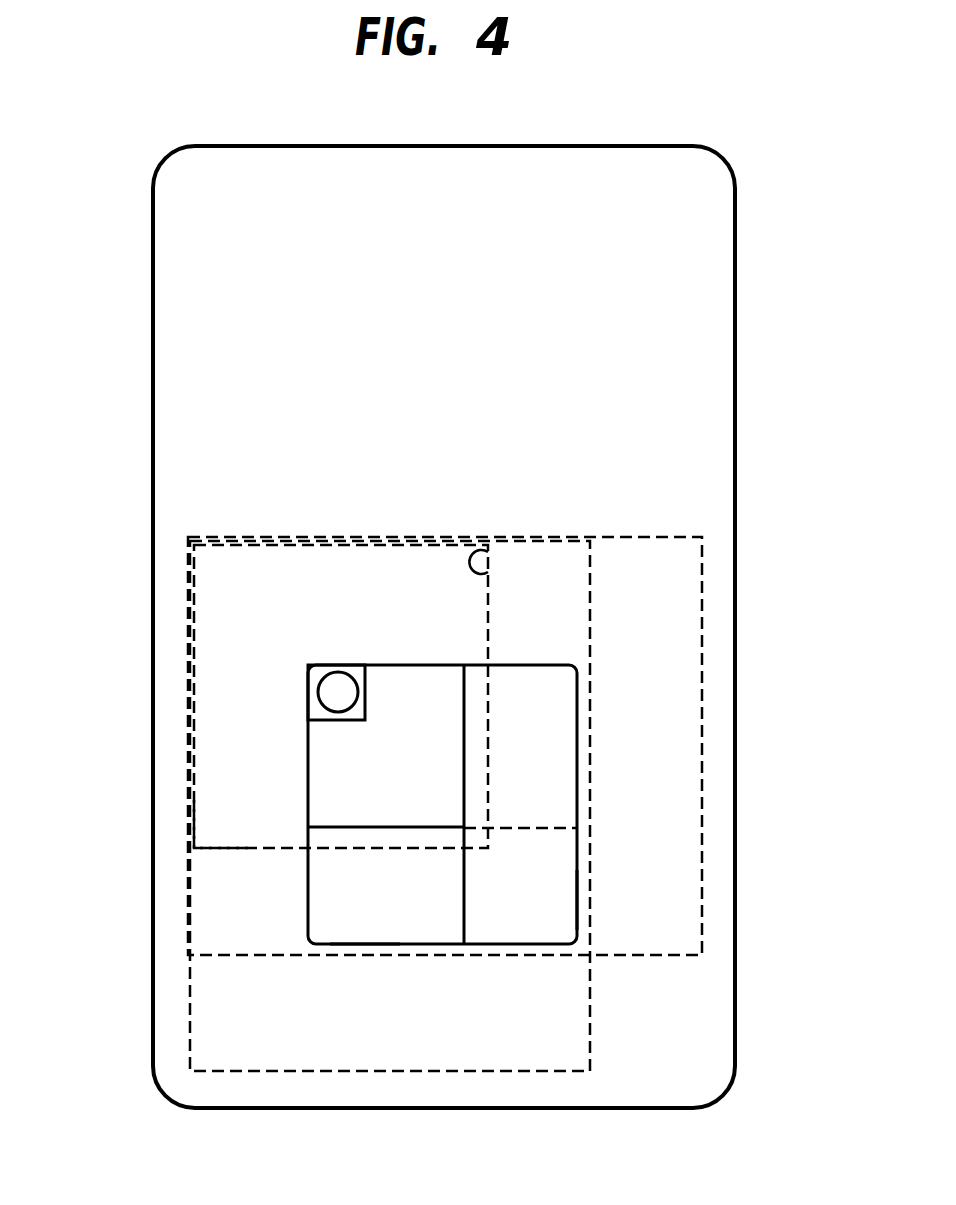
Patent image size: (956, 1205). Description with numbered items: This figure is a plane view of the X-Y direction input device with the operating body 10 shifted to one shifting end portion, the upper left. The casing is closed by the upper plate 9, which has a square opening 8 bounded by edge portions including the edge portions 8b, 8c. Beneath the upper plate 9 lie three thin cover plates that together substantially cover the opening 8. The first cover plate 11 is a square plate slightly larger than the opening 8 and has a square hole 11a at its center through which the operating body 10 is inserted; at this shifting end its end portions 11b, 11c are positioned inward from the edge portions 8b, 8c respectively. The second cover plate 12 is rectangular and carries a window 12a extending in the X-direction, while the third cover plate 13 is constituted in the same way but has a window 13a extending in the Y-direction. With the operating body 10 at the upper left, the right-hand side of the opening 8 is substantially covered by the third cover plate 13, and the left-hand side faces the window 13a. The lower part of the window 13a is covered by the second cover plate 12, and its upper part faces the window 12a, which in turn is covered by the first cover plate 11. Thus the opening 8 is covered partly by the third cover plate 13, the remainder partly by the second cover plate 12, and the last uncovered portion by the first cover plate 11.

The square opening 8 is at (417, 944).
The edge portion of the opening 8b is at (355, 944).
The edge portion of the opening 8c is at (577, 902).
The upper plate 9 is at (277, 1090).
The operating body 10 is at (332, 686).
The first cover plate 11 is at (323, 778).
The square hole 11a is at (330, 720).
The end portion of the first cover plate 11b is at (248, 846).
The end portion of the first cover plate 11c is at (487, 540).
The second cover plate 12 is at (683, 660).
The window of the second cover plate 12a is at (347, 818).
The third cover plate 13 is at (208, 1040).
The window of the third cover plate 13a is at (452, 908).